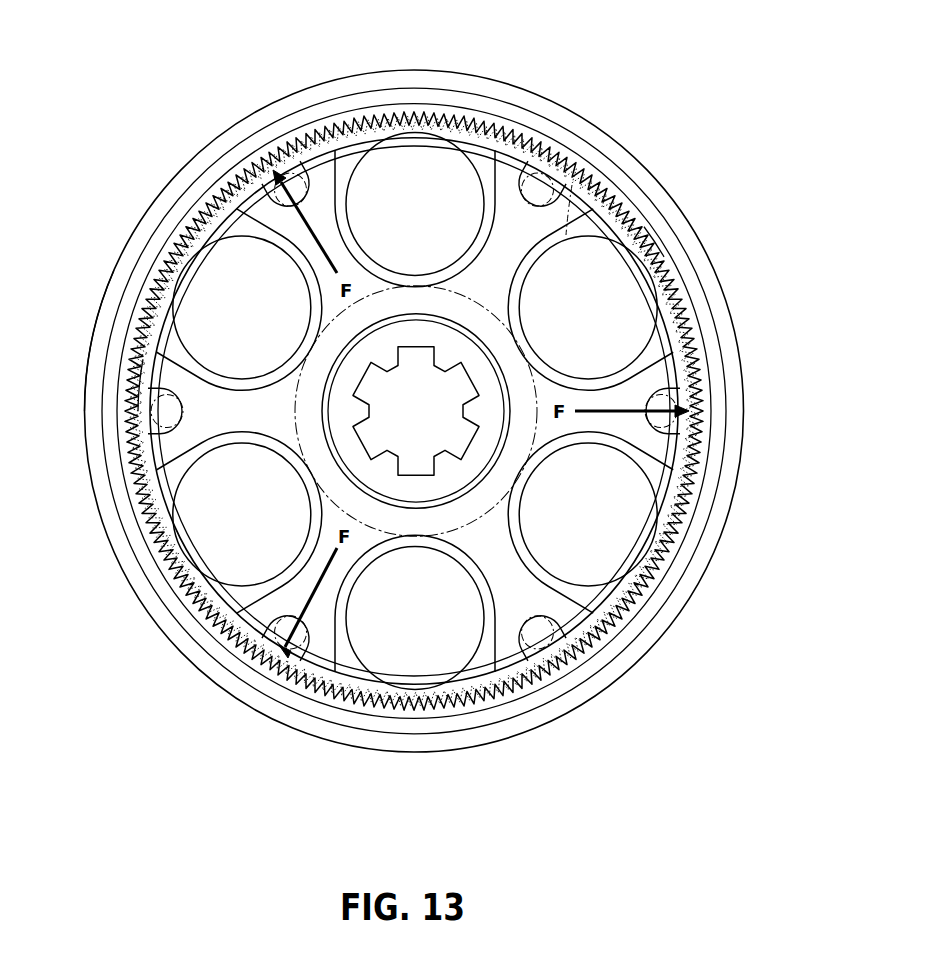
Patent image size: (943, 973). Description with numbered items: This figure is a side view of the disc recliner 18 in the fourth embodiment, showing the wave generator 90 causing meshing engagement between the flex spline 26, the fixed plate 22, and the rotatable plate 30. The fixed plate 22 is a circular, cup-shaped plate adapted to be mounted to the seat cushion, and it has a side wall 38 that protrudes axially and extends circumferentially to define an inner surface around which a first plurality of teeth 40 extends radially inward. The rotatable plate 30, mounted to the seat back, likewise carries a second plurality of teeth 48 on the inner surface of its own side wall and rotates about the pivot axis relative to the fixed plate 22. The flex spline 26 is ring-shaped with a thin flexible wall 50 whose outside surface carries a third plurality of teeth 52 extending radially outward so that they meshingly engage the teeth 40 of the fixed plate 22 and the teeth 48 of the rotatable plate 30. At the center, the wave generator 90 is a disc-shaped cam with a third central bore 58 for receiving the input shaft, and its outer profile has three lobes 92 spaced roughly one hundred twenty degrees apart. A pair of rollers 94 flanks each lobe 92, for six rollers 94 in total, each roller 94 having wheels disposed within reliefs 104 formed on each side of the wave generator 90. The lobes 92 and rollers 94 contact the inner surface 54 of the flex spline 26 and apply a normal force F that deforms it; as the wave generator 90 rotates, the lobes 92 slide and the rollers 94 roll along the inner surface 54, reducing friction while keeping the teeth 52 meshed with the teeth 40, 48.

The disc recliner 18 is at (184, 156).
The fixed plate 22 is at (730, 487).
The flex spline 26 is at (603, 187).
The rotatable plate 30 is at (187, 432).
The side wall 38 is at (90, 395).
The first plurality of teeth 40 is at (487, 120).
The second plurality of teeth 48 is at (540, 97).
The flexible wall 50 is at (650, 230).
The third plurality of teeth 52 is at (137, 460).
The inner surface 54 is at (568, 207).
The third central bore 58 is at (463, 443).
The wave generator 90 is at (513, 578).
The lobes 92 is at (273, 160).
The rollers 94 is at (412, 192).
The reliefs 104 is at (343, 153).